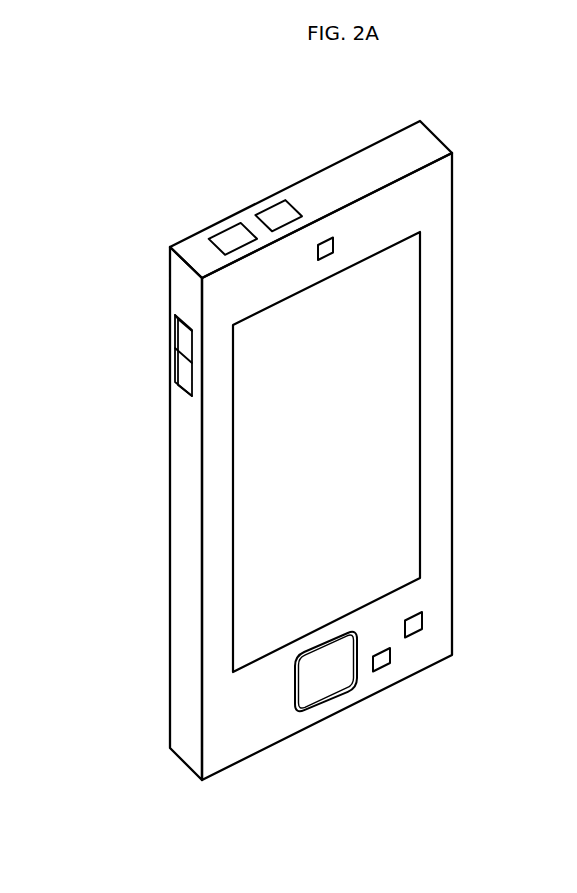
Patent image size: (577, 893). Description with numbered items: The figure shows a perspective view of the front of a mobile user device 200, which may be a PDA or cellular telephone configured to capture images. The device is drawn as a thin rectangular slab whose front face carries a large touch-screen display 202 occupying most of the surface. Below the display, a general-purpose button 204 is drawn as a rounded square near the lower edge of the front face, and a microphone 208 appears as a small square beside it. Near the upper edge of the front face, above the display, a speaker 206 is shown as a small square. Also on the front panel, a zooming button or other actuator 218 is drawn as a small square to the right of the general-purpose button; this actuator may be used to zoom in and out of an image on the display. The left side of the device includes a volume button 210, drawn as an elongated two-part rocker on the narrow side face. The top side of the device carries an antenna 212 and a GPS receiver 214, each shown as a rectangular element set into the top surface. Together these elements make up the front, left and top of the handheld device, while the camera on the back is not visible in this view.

The mobile user device 200 is at (428, 85).
The touch-screen display 202 is at (233, 510).
The general-purpose button 204 is at (328, 702).
The speaker 206 is at (325, 239).
The microphone 208 is at (390, 662).
The volume button 210 is at (173, 365).
The antenna 212 is at (208, 238).
The GPS receiver 214 is at (258, 213).
The zooming button or other actuator 218 is at (422, 623).